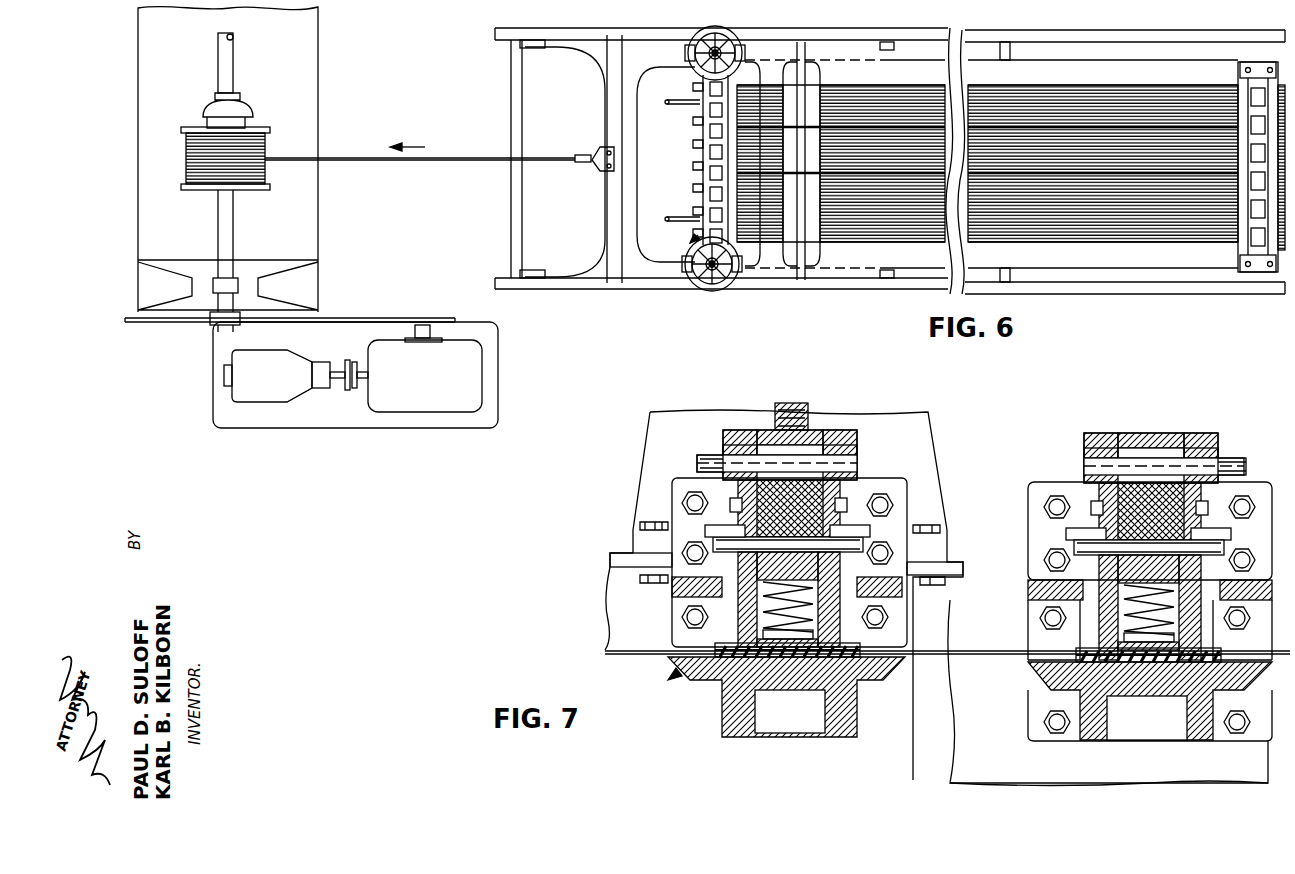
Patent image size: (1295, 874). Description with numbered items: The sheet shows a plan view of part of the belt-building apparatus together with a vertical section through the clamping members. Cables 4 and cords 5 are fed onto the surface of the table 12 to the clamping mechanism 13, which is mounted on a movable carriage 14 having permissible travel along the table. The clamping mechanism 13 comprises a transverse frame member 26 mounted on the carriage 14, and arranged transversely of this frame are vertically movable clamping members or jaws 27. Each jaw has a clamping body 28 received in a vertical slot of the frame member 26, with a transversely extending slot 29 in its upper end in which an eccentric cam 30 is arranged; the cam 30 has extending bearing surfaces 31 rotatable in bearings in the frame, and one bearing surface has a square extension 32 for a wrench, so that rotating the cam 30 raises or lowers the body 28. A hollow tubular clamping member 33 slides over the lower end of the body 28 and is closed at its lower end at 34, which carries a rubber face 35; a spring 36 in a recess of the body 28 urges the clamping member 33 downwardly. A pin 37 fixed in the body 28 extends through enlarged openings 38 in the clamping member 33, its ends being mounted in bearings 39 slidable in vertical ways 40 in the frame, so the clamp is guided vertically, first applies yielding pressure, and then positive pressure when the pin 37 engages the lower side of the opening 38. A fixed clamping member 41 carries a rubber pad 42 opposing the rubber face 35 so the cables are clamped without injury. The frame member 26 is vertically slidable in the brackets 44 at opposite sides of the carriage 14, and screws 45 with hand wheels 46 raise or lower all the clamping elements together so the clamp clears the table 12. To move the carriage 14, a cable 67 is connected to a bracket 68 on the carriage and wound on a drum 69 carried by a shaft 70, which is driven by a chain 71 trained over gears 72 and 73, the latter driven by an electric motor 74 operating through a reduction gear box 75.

In FIG. 6, the cables 4 is at (1150, 147).
In FIG. 7, the cables 4 is at (963, 651).
In FIG. 6, the cords 5 is at (1195, 120).
In FIG. 6, the table 12 is at (1092, 262).
In FIG. 6, the clamping mechanism 13 is at (690, 240).
In FIG. 7, the clamping mechanism 13 is at (670, 678).
In FIG. 6, the carriage 14 is at (600, 262).
In FIG. 7, the carriage 14 is at (932, 462).
In FIG. 6, the frame member 26 is at (703, 193).
In FIG. 7, the frame member 26 is at (730, 430).
In FIG. 6, the clamping members 27 is at (713, 131).
In FIG. 7, the clamping members 27 is at (760, 590).
In FIG. 7, the clamping body 28 is at (770, 500).
In FIG. 7, the slot 29 is at (802, 437).
In FIG. 7, the eccentric cam 30 is at (855, 466).
In FIG. 7, the bearing surfaces 31 is at (726, 452).
In FIG. 6, the extension 32 is at (698, 177).
In FIG. 7, the extension 32 is at (700, 460).
In FIG. 7, the clamping member 33 is at (740, 616).
In FIG. 7, the closed lower end 34 is at (880, 638).
In FIG. 7, the rubber face 35 is at (718, 648).
In FIG. 7, the spring 36 is at (812, 613).
In FIG. 7, the pin 37 is at (862, 545).
In FIG. 7, the enlarged openings 38 is at (650, 578).
In FIG. 7, the bearings 39 is at (720, 532).
In FIG. 7, the vertical ways 40 is at (730, 520).
In FIG. 7, the fixed clamping member 41 is at (728, 690).
In FIG. 7, the rubber pad 42 is at (778, 661).
In FIG. 7, the brackets 44 is at (660, 415).
In FIG. 6, the screws 45 is at (722, 50).
In FIG. 7, the screws 45 is at (787, 404).
In FIG. 6, the hand wheels 46 is at (719, 42).
In FIG. 6, the cable 67 is at (494, 162).
In FIG. 6, the bracket 68 is at (598, 165).
In FIG. 6, the drum 69 is at (256, 181).
In FIG. 6, the shaft 70 is at (232, 233).
In FIG. 6, the chain 71 is at (363, 318).
In FIG. 6, the gear 72 is at (198, 323).
In FIG. 6, the gear 73 is at (413, 324).
In FIG. 6, the electric motor 74 is at (247, 390).
In FIG. 6, the reduction gear box 75 is at (420, 400).